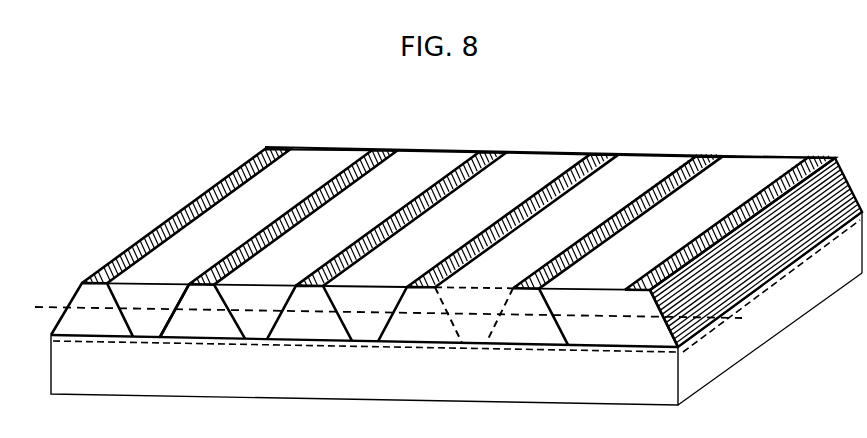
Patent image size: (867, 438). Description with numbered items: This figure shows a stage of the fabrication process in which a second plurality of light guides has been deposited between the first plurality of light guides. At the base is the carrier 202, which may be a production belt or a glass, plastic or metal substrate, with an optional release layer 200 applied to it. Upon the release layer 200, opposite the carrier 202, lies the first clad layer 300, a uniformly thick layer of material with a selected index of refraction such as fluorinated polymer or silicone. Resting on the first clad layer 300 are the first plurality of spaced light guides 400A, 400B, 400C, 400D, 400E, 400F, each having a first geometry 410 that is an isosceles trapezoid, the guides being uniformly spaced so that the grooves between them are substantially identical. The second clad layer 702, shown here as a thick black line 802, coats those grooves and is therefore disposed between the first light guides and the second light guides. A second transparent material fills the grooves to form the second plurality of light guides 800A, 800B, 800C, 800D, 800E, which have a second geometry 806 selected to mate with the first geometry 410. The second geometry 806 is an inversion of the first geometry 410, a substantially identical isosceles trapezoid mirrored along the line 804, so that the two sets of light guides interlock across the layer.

The release layer 200 is at (706, 342).
The carrier 202 is at (358, 394).
The first clad layer 300 is at (545, 348).
The light guide 400A is at (112, 331).
The light guide 400B is at (224, 332).
The light guide 400C is at (333, 333).
The light guide 400D is at (440, 334).
The light guide 400E is at (554, 335).
The light guide 400F is at (659, 339).
The first geometry 410 is at (643, 290).
The second clad layer 702 is at (127, 247).
The thick black line 802 is at (180, 296).
The line 804 is at (385, 302).
The second geometry 806 is at (465, 287).
The second light guide 800A is at (286, 208).
The second light guide 800B is at (396, 208).
The second light guide 800C is at (504, 209).
The second light guide 800D is at (610, 211).
The second light guide 800E is at (711, 221).